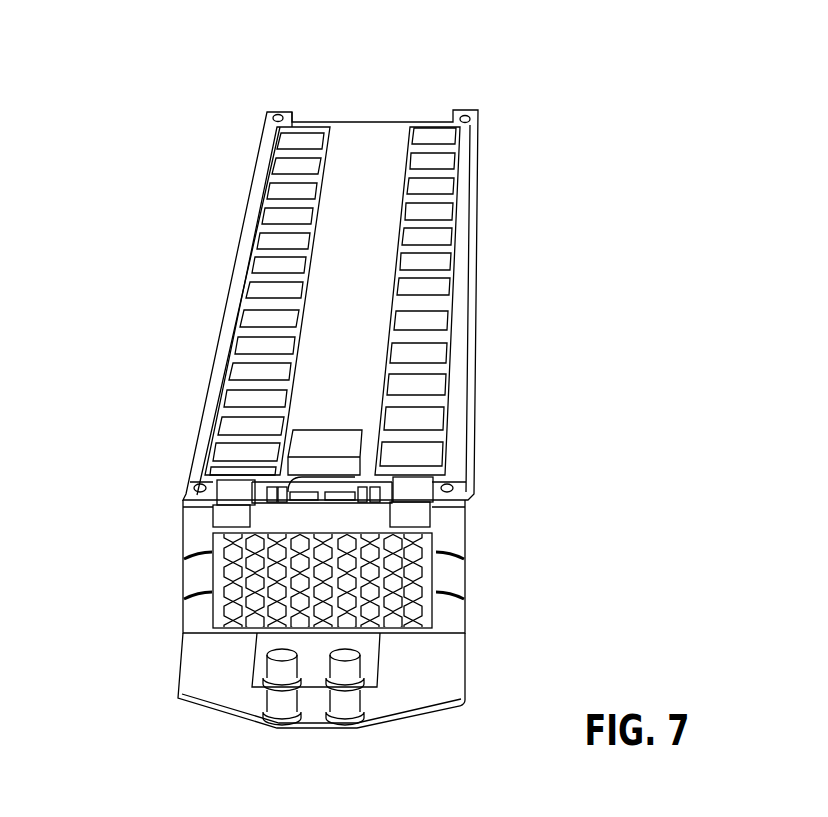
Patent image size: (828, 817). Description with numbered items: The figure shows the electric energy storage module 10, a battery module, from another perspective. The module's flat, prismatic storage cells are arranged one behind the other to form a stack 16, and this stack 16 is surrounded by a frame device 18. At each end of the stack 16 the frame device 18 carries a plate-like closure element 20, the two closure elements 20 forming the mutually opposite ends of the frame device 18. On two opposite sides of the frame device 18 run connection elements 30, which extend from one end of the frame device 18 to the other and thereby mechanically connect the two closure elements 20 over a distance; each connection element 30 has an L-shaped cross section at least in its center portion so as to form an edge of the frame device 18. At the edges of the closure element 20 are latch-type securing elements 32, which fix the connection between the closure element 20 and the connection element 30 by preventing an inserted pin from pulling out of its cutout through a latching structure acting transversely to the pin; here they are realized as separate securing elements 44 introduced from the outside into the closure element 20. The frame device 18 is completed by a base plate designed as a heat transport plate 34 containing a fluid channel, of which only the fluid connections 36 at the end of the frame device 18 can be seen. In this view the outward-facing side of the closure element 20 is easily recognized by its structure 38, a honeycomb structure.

The electric energy storage module 10 is at (332, 377).
The stack 16 is at (438, 127).
The frame device 18 is at (250, 193).
The closure element 20 is at (445, 617).
The connection element 30 is at (228, 320).
The securing element 32 is at (210, 594).
The heat transport plate 34 is at (430, 683).
The fluid connections 36 is at (340, 702).
The structure 38 is at (213, 612).
The separate securing element 44 is at (468, 594).